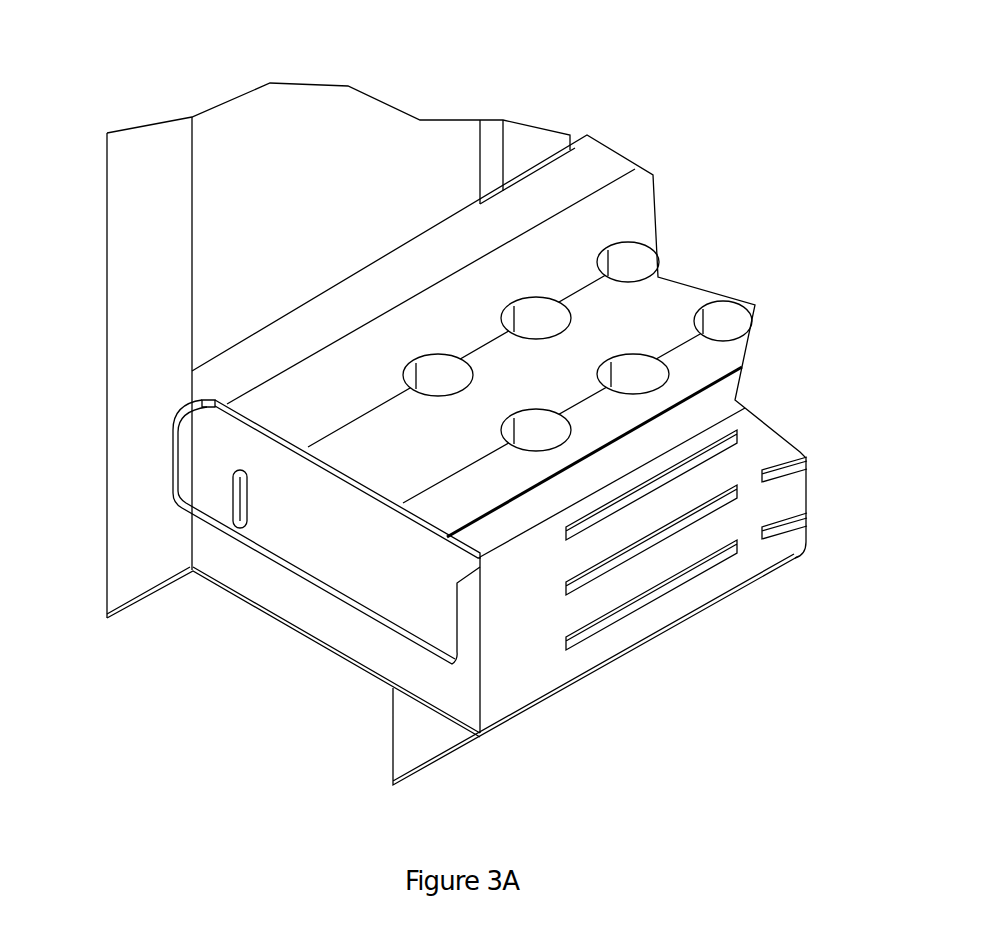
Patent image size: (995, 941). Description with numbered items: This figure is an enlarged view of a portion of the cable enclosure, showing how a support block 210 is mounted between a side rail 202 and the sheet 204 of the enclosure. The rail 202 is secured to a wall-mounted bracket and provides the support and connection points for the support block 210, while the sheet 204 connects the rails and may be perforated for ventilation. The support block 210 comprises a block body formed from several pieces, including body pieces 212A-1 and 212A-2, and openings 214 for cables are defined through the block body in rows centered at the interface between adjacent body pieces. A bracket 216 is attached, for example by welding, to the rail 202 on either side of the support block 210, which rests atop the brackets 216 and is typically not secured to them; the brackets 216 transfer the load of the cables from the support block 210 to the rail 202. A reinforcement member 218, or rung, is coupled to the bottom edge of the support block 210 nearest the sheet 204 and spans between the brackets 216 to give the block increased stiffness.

The side rail 202 is at (167, 170).
The support block 210 is at (535, 460).
The opening 214 is at (635, 372).
The block body piece 212A-1 is at (275, 388).
The block body piece 212A-2 is at (355, 452).
The bracket 216 is at (357, 527).
The reinforcement member 218 is at (545, 493).
The sheet 204 is at (657, 623).